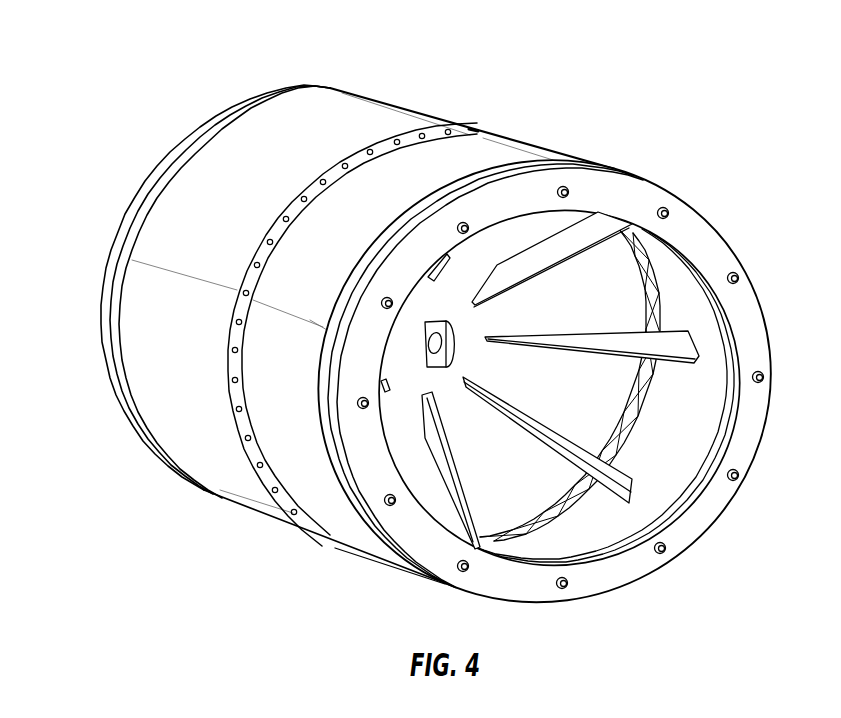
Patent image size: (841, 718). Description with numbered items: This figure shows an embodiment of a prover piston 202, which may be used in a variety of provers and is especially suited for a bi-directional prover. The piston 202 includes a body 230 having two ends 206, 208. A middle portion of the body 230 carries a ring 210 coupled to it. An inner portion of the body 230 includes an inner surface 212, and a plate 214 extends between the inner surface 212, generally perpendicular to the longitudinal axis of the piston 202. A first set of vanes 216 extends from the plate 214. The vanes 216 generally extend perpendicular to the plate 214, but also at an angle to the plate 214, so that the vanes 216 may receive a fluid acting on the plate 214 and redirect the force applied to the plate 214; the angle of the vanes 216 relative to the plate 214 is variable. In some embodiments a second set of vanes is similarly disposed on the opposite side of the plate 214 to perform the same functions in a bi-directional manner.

The prover piston 202 is at (104, 68).
The end 206 is at (703, 251).
The end 208 is at (143, 192).
The ring 210 is at (253, 257).
The inner surface 212 is at (570, 497).
The plate 214 is at (645, 398).
The vanes 216 is at (605, 226).
The body 230 is at (418, 103).